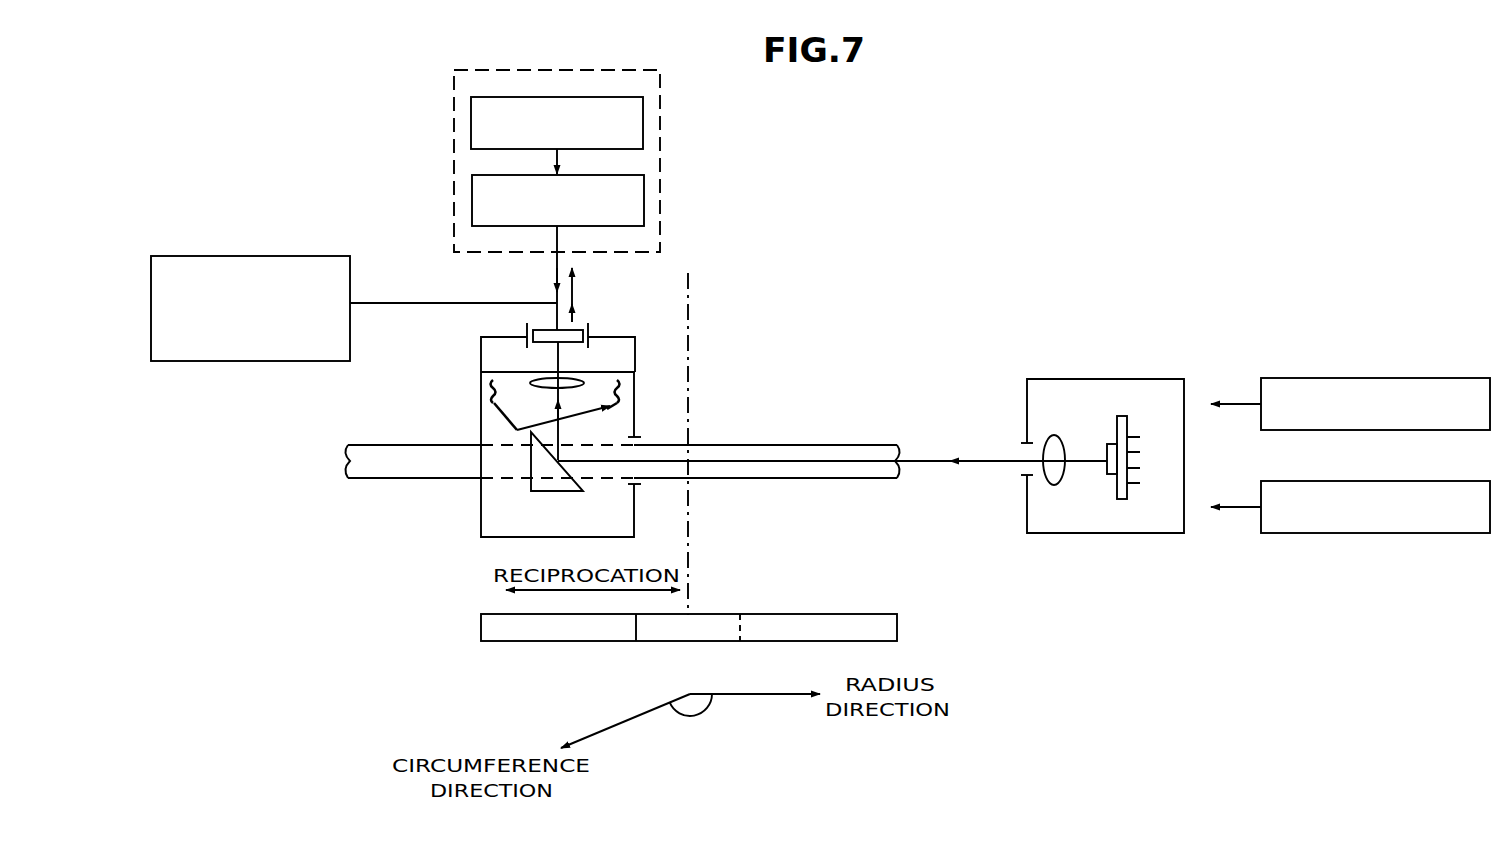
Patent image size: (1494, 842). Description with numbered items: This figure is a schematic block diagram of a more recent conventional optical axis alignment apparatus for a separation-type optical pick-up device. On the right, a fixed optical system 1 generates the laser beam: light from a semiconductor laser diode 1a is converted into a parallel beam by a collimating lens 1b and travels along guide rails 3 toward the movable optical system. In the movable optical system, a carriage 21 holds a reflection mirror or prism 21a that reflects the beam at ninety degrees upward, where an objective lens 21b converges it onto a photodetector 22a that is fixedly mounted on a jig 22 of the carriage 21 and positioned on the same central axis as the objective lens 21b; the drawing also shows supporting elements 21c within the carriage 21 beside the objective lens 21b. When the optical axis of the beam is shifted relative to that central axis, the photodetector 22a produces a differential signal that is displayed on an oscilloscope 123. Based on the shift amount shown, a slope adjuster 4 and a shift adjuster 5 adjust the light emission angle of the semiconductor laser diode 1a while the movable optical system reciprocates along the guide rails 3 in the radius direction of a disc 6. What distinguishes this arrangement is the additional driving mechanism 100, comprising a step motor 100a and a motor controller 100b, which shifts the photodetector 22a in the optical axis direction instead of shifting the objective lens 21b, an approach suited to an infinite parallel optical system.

The driving mechanism 100 is at (454, 119).
The motor controller 100b is at (643, 123).
The step motor 100a is at (644, 204).
The oscilloscope 123 is at (266, 256).
The photodetector 22a is at (560, 328).
The jig 22 is at (481, 353).
The carriage 21 is at (481, 426).
The objective lens 21b is at (548, 401).
The springs 21c is at (530, 432).
The prism 21a is at (554, 494).
The guide rail 3 is at (796, 481).
The disc 6 is at (897, 627).
The fixed optical system 1 is at (1078, 377).
The collimating lens 1b is at (1054, 486).
The semiconductor laser diode 1a is at (1108, 474).
The slope adjuster 4 is at (1283, 378).
The shift adjuster 5 is at (1283, 481).